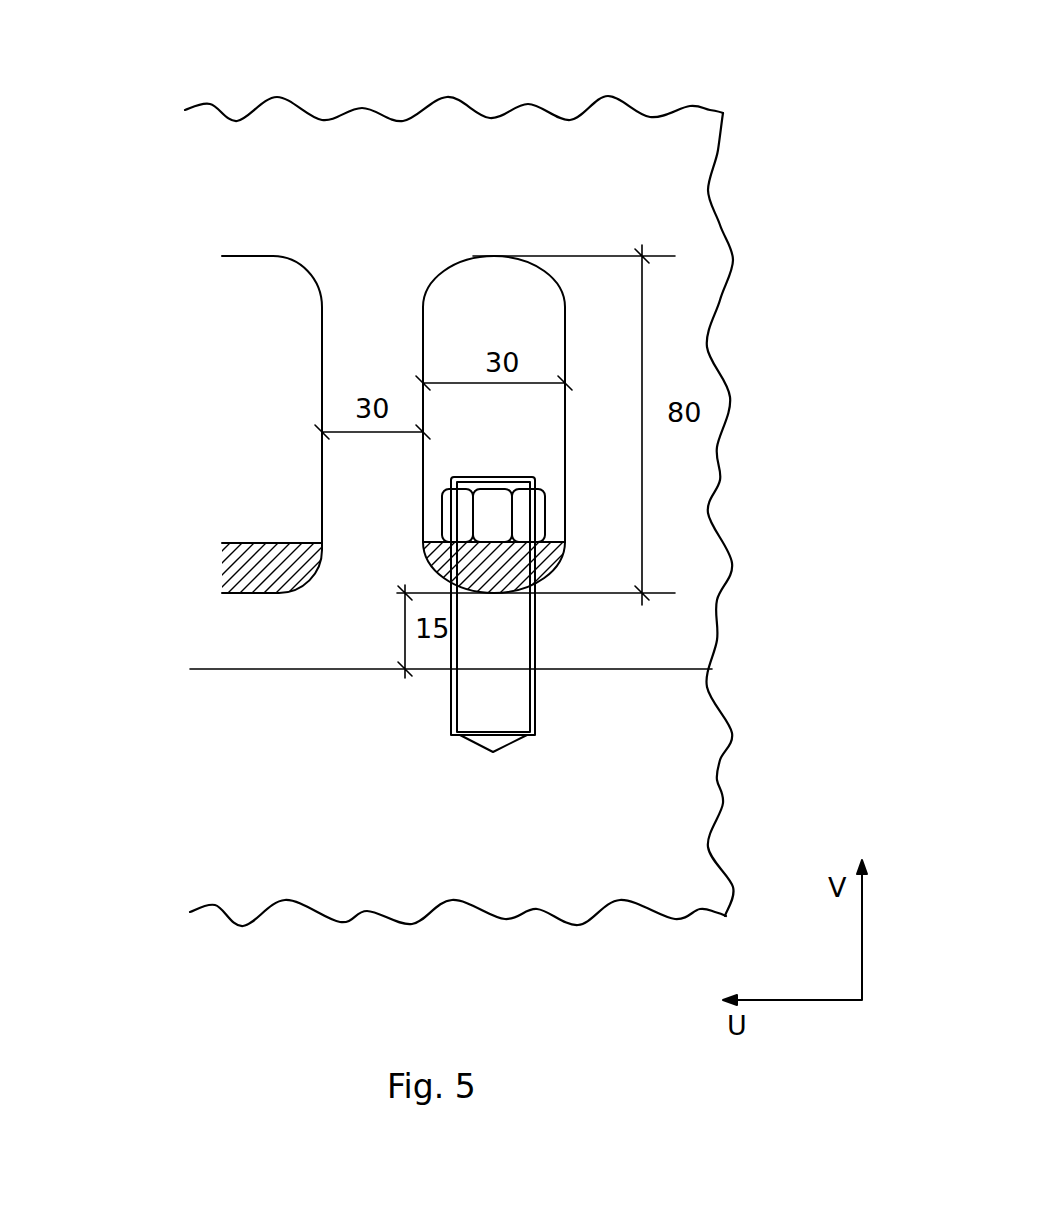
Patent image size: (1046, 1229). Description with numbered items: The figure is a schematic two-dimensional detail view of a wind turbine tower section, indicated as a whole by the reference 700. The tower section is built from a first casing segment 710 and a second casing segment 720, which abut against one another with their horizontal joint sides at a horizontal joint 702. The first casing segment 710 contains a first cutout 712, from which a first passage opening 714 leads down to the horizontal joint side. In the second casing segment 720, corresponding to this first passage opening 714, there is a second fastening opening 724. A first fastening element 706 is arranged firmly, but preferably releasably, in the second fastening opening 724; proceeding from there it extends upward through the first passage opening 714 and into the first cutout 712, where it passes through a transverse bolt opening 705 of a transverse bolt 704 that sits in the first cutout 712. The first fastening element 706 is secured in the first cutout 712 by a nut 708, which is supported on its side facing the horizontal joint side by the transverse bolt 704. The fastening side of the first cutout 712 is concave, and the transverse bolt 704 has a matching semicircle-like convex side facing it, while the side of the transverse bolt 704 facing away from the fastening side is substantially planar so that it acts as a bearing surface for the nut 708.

The fastening assembly 700 is at (178, 159).
The horizontal joint 702 is at (177, 667).
The transverse bolt 704 is at (560, 547).
The transverse bolt opening 705 is at (440, 543).
The first fastening element 706 is at (478, 652).
The nut 708 is at (448, 500).
The first casing segment 710 is at (616, 166).
The first cutout 712 is at (577, 325).
The first passage opening 714 is at (548, 631).
The second casing segment 720 is at (658, 791).
The second fastening opening 724 is at (548, 708).